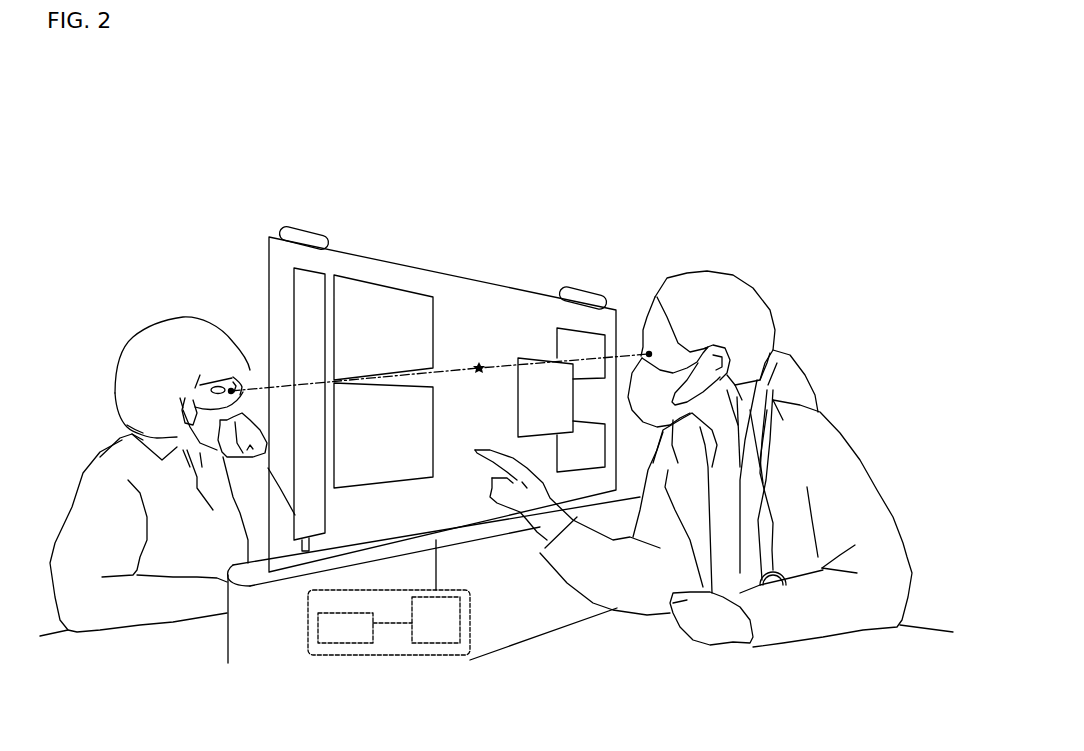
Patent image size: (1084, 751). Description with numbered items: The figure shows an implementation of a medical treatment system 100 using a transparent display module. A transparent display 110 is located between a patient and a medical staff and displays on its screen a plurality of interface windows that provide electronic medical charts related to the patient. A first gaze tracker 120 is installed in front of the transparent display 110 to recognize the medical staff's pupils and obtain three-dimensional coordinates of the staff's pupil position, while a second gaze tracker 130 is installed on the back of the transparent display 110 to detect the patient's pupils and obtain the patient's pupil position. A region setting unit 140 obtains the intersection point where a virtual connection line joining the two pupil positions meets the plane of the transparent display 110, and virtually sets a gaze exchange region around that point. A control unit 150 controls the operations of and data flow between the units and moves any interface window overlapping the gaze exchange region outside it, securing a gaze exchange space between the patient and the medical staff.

The medical treatment system 100 is at (148, 126).
The transparent display 110 is at (269, 282).
The first gaze tracker 120 is at (585, 287).
The second gaze tracker 130 is at (305, 228).
The region setting unit 140 is at (340, 643).
The control unit 150 is at (437, 643).